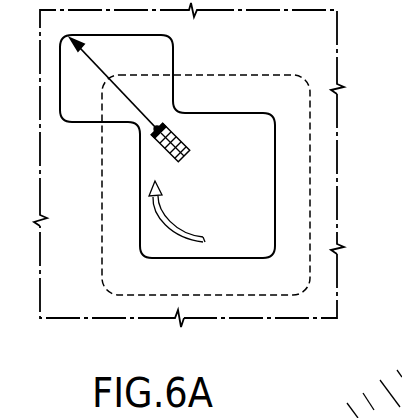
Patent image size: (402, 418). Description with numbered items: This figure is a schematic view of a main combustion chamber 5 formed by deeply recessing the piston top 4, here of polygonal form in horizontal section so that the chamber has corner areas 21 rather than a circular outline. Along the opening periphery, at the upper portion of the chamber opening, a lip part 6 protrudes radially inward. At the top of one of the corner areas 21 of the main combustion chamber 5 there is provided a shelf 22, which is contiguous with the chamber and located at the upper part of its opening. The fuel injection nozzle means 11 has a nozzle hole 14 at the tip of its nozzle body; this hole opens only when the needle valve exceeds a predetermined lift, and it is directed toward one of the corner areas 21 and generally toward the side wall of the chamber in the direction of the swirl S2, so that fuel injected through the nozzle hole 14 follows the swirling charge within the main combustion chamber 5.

The piston top 4 is at (326, 66).
The corner area 21 is at (129, 79).
The shelf 22 is at (80, 82).
The nozzle hole 14 is at (155, 122).
The fuel injection nozzle means 11 is at (181, 140).
The main combustion chamber 5 is at (224, 215).
The lip part 6 is at (275, 215).
The swirl S2 is at (186, 243).